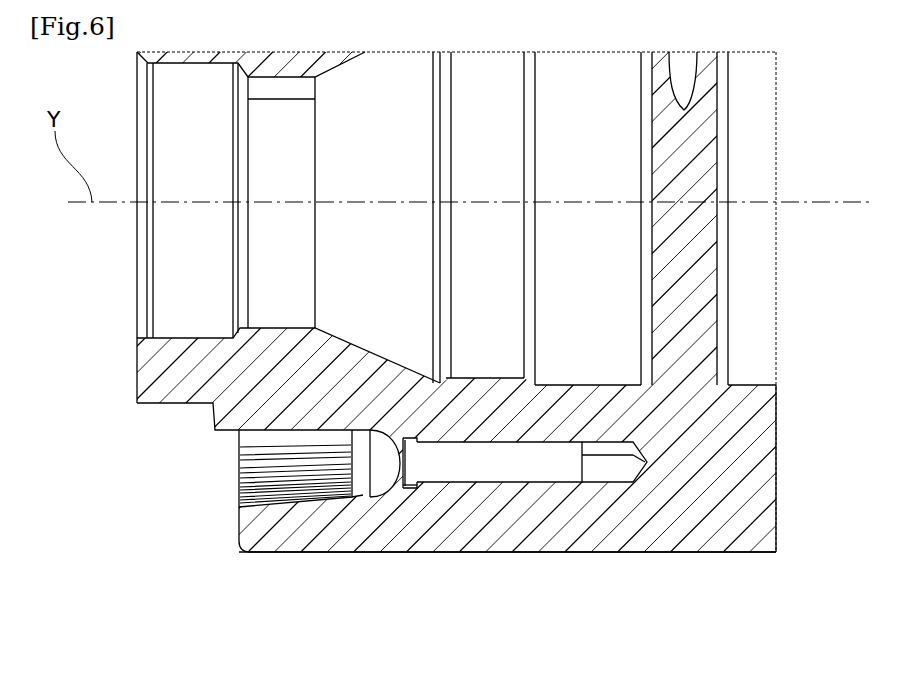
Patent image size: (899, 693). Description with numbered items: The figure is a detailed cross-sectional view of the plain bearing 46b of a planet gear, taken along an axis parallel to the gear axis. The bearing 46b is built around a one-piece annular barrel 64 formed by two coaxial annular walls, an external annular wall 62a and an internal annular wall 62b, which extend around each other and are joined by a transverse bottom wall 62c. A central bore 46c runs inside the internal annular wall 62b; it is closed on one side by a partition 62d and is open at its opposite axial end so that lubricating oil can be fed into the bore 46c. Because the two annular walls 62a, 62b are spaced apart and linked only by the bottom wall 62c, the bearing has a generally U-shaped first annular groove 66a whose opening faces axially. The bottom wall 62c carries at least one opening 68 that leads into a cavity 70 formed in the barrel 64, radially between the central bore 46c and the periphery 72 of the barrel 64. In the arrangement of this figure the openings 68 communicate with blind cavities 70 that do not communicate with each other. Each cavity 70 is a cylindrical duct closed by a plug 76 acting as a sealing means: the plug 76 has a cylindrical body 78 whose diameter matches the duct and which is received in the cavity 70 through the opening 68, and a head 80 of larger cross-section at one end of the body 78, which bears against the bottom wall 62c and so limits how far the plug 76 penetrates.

The plain bearing 46b is at (767, 570).
The bore 46c is at (753, 243).
The external annular wall 62a is at (257, 523).
The internal annular wall 62b is at (230, 407).
The transverse bottom wall 62c is at (392, 456).
The partition 62d is at (168, 288).
The annular barrel 64 is at (709, 523).
The first annular groove 66a is at (297, 478).
The opening 68 is at (417, 487).
The cavity 70 is at (617, 469).
The periphery 72 is at (403, 490).
The plug 76 is at (504, 468).
The cylindrical body 78 is at (558, 468).
The head 80 is at (408, 483).